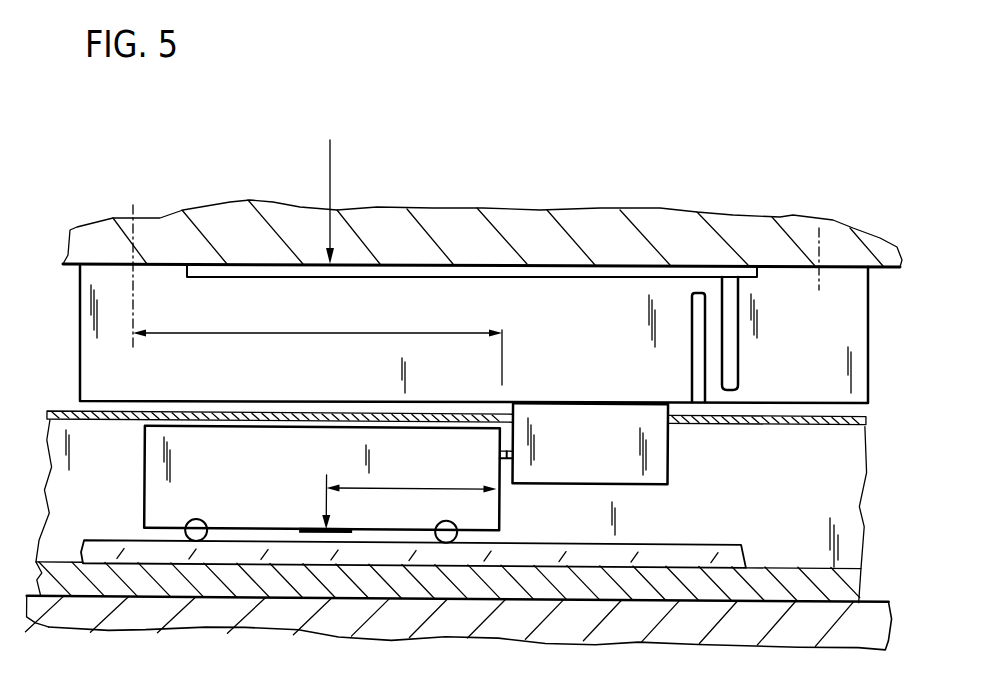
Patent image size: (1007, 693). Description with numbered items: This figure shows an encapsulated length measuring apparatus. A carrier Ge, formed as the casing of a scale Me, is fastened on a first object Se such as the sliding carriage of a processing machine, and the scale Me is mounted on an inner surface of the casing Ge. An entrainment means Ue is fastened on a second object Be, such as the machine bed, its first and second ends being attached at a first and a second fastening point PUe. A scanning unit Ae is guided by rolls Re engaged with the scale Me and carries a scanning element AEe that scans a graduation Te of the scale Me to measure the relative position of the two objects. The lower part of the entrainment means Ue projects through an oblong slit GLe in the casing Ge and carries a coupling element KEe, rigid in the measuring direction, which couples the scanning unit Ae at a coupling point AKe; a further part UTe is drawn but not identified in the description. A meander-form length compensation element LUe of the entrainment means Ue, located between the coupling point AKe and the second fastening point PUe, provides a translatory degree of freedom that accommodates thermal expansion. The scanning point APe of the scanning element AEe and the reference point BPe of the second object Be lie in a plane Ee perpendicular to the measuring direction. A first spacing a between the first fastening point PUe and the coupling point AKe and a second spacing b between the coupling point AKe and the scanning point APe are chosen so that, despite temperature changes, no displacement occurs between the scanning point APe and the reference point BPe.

The fastening point PUe is at (143, 263).
The plane Ee is at (331, 156).
The reference point BPe is at (331, 193).
The second object Be is at (517, 230).
The meander-form length compensation element LUe is at (717, 312).
The first spacing a is at (317, 347).
The oblong slit GLe is at (67, 410).
The scanning unit Ae is at (158, 480).
The rolls Re is at (188, 522).
The scanning point APe is at (325, 492).
The second spacing b is at (411, 475).
The coupling point AKe is at (500, 455).
The scanning element AEe is at (335, 528).
The coupling element KEe is at (507, 463).
The transfer unit UTe is at (658, 462).
The entrainment means Ue is at (798, 385).
The graduation Te is at (718, 542).
The carrier Ge is at (112, 582).
The scale Me is at (213, 556).
The first object Se is at (338, 620).